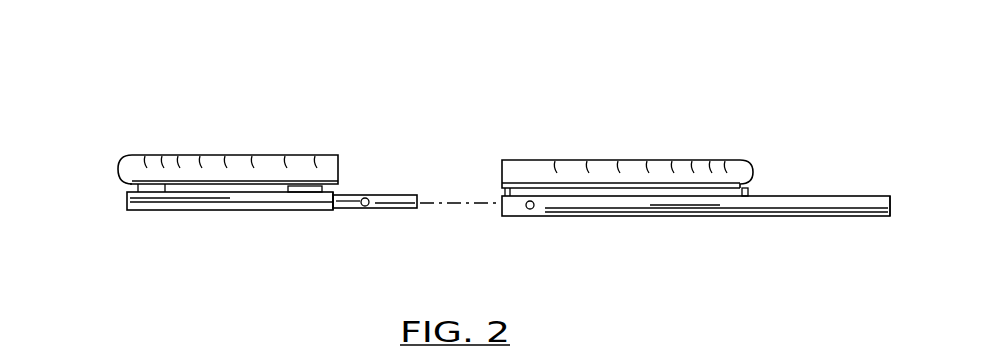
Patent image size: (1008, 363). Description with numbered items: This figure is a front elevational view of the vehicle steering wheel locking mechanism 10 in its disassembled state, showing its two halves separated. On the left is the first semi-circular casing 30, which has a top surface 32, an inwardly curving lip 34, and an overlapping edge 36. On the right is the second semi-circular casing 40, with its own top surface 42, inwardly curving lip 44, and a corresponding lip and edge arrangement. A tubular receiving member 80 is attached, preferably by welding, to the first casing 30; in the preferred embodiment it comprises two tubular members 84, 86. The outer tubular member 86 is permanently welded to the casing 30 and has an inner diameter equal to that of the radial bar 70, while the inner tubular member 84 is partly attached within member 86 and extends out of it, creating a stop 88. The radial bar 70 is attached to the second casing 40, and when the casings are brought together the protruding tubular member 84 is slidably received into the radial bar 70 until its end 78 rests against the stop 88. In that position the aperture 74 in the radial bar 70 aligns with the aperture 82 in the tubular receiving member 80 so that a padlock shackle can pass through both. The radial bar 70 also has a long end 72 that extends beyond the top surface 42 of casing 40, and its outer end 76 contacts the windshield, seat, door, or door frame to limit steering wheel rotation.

The vehicle steering wheel locking mechanism 10 is at (216, 140).
The first semi-circular casing 30 is at (345, 156).
The inwardly curving lip 34 is at (118, 152).
The top surface 32 is at (121, 186).
The overlapping edge 36 is at (344, 185).
The tubular member 86 is at (218, 211).
The stop 88 is at (335, 214).
The tubular receiving member 80 is at (395, 195).
The aperture 82 is at (366, 208).
The tubular member 84 is at (352, 210).
The second semi-circular casing 40 is at (501, 172).
The inwardly curving lip 44 is at (746, 158).
The top surface 42 is at (752, 194).
The long end 72 is at (800, 218).
The radial bar 70 is at (662, 218).
The end 78 is at (500, 213).
The aperture 74 is at (538, 216).
The end 76 is at (892, 199).